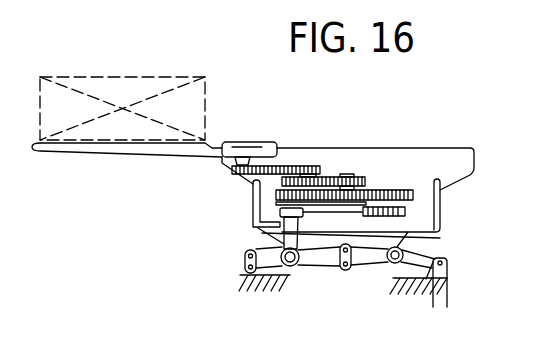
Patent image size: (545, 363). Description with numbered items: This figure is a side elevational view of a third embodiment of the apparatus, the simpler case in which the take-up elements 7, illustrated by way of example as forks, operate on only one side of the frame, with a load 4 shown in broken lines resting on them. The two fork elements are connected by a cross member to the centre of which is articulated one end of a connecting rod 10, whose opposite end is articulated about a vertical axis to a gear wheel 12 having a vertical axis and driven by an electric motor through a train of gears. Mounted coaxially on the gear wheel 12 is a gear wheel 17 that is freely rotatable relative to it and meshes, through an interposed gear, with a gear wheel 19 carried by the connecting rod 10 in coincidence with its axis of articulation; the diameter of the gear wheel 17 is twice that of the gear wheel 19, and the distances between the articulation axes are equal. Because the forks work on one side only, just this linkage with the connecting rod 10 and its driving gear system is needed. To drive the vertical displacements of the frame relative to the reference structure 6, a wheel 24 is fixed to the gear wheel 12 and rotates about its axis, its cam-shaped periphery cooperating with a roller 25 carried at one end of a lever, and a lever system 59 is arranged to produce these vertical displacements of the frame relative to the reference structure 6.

The load 4 is at (196, 105).
The take-up elements 7 is at (222, 143).
The connecting rod 10 is at (290, 166).
The gear wheel 17 is at (353, 178).
The gear wheel 12 is at (398, 192).
The wheel 24 is at (405, 210).
The gear wheel 19 is at (283, 178).
The roller 25 is at (272, 214).
The lever system 59 is at (339, 280).
The reference structure 6 is at (440, 290).